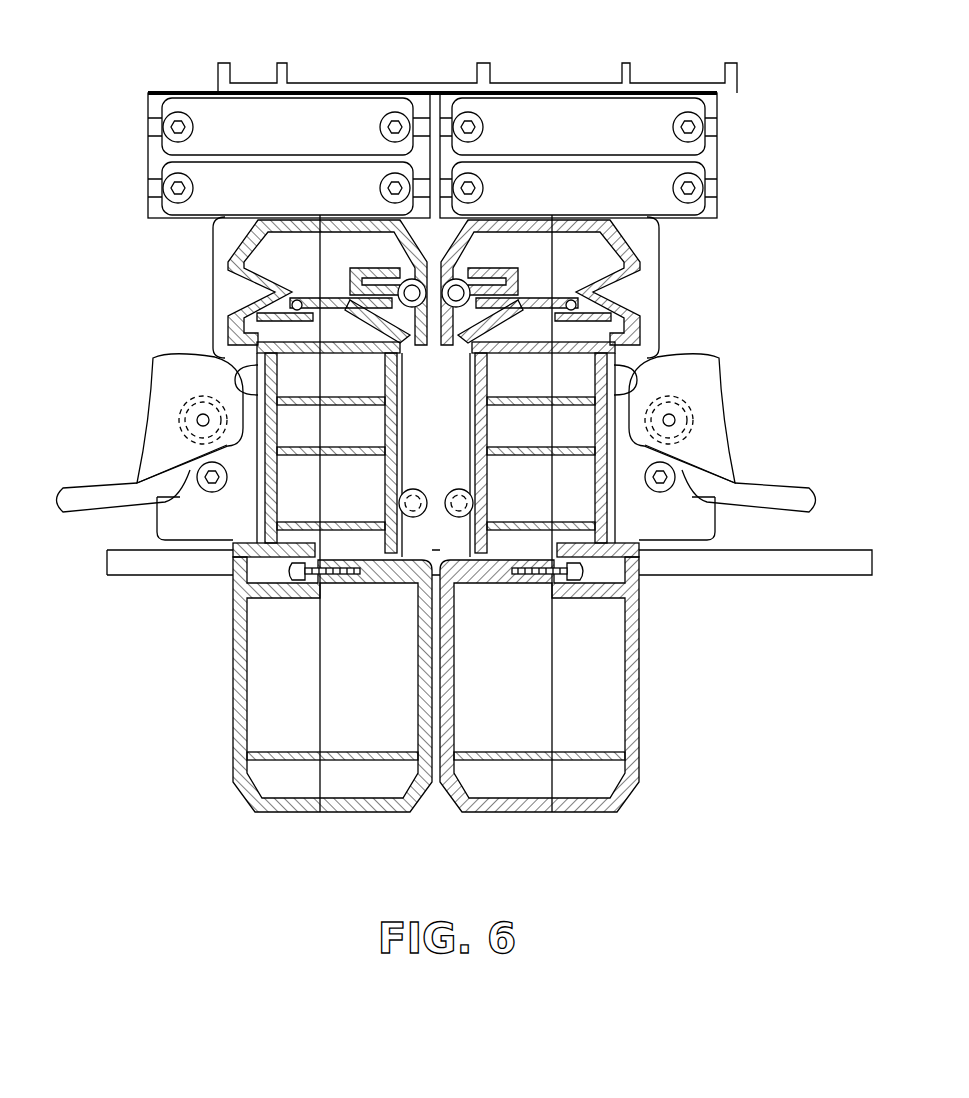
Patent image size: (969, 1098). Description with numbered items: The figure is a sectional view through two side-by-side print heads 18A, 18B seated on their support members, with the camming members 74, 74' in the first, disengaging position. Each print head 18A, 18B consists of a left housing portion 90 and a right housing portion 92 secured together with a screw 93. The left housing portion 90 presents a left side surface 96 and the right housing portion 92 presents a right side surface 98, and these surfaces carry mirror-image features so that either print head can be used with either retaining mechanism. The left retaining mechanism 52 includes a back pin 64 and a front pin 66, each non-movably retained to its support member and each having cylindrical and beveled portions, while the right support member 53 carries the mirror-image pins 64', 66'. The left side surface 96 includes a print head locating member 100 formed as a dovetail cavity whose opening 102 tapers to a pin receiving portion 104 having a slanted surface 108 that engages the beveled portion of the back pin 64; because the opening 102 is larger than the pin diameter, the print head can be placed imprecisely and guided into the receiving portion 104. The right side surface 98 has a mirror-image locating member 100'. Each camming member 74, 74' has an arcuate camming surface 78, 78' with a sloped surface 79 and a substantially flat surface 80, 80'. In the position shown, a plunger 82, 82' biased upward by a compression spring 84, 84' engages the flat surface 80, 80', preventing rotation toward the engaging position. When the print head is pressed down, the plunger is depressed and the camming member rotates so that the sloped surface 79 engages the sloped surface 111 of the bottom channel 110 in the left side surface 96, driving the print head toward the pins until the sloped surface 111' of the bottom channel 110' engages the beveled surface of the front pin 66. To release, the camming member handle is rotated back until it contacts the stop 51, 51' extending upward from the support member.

The print head 18A is at (313, 832).
The print head 18B is at (560, 843).
The stop 51 is at (124, 473).
The stop 51' is at (765, 491).
The left retaining mechanism 52 is at (222, 232).
The right support member 53 is at (655, 232).
The back pin 64 is at (395, 168).
The back pin 64' is at (469, 170).
The front pin 66 is at (403, 570).
The front pin 66' is at (472, 570).
The camming member 74 is at (148, 431).
The camming member 74' is at (734, 429).
The arcuate camming surface 78 is at (174, 398).
The arcuate camming surface 78' is at (730, 394).
The sloped surface 79 is at (180, 372).
The substantially flat surface 80 is at (136, 429).
The substantially flat surface 80' is at (749, 411).
The plunger 82 is at (172, 414).
The plunger 82' is at (712, 430).
The compression spring 84 is at (167, 431).
The compression spring 84' is at (739, 417).
The left housing portion 90 is at (270, 812).
The right housing portion 92 is at (362, 812).
The screw 93 is at (292, 575).
The left side surface 96 is at (258, 532).
The right side surface 98 is at (242, 372).
The print head locating member 100 is at (338, 171).
The print head locating member 100' is at (632, 280).
The opening 102 is at (436, 300).
The pin receiving portion 104 is at (517, 290).
The slanted surface 108 is at (270, 310).
The bottom channel 110 is at (463, 543).
The bottom channel 110' is at (552, 241).
The sloped surface 111 is at (422, 427).
The sloped surface 111' is at (652, 449).